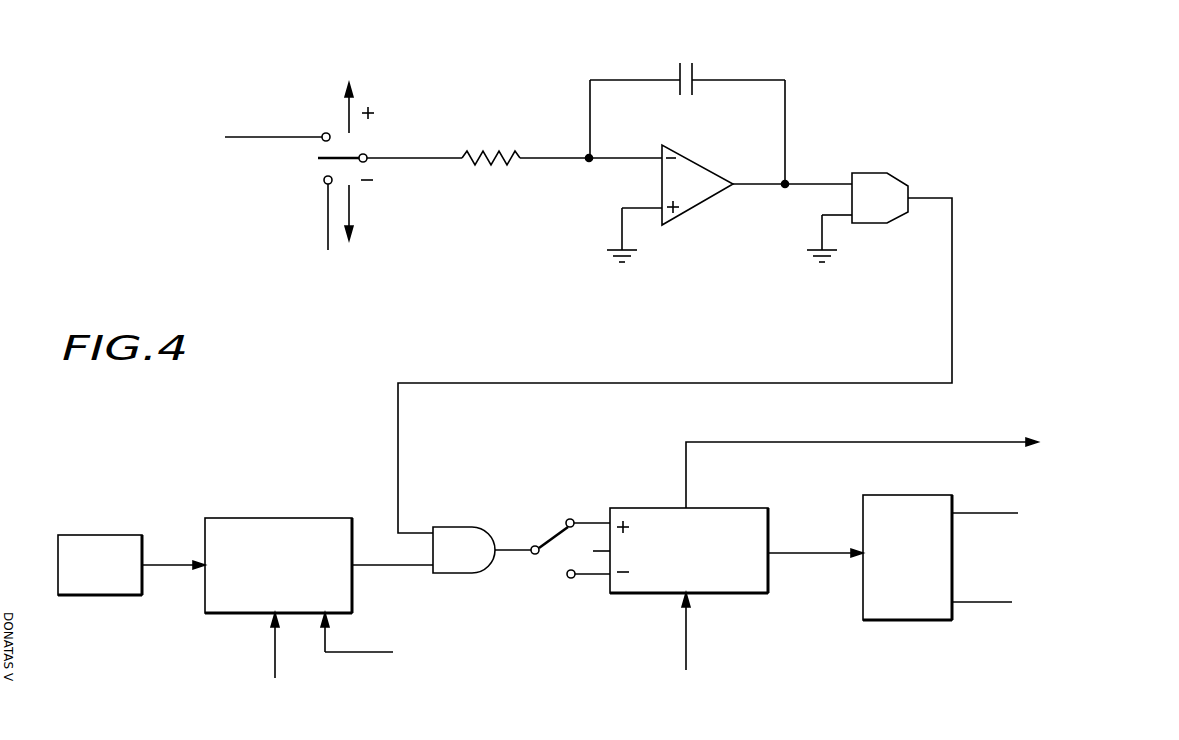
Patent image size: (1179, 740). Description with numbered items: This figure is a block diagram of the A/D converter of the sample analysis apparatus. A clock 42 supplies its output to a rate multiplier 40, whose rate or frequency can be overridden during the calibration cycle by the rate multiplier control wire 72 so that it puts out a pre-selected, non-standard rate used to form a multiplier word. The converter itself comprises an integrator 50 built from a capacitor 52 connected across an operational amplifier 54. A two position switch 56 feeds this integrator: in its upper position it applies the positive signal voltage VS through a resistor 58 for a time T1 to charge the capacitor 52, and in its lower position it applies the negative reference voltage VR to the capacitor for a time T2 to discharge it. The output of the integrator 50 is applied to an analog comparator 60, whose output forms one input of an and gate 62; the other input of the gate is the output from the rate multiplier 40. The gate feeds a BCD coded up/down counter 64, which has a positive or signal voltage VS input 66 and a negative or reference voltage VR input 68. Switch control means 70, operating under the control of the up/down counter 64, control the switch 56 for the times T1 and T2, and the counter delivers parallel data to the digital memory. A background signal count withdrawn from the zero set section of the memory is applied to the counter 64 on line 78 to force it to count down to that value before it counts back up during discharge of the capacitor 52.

The rate multiplier 40 is at (282, 518).
The clock 42 is at (117, 595).
The integrator 50 is at (689, 150).
The capacitor 52 is at (693, 87).
The operational amplifier 54 is at (710, 197).
The two position switch 56 is at (318, 159).
The resistor 58 is at (495, 157).
The analog comparator 60 is at (897, 223).
The and gate 62 is at (482, 533).
The BCD coded up/down counter 64 is at (735, 587).
The positive or signal voltage VS input 66 is at (595, 520).
The negative or reference voltage VR input 68 is at (599, 580).
The switch control means 70 is at (920, 620).
The rate multiplier control wire 72 is at (373, 652).
The line 78 is at (684, 640).